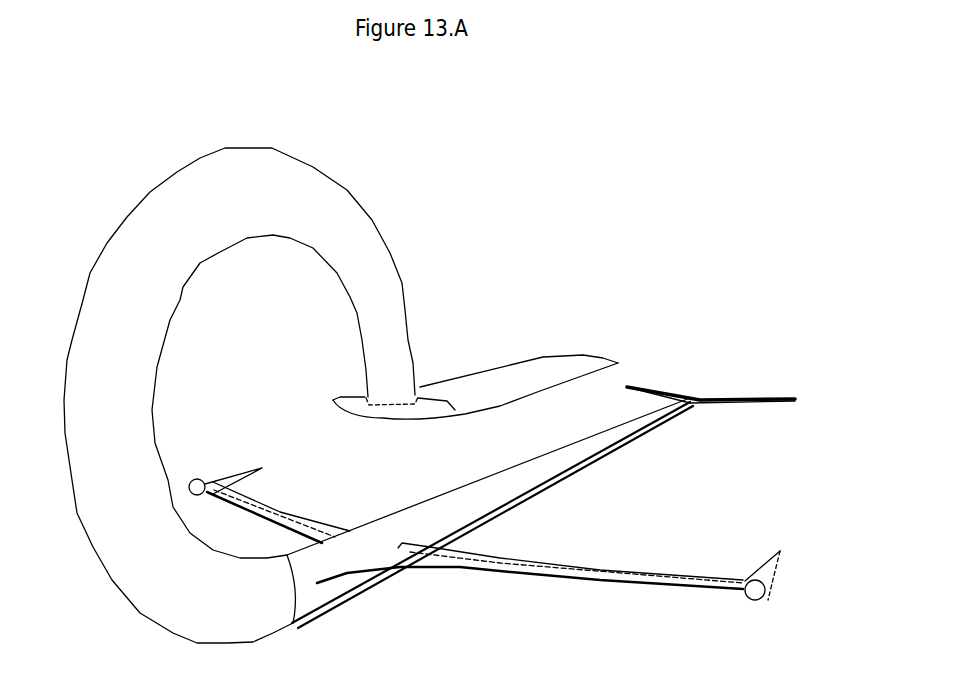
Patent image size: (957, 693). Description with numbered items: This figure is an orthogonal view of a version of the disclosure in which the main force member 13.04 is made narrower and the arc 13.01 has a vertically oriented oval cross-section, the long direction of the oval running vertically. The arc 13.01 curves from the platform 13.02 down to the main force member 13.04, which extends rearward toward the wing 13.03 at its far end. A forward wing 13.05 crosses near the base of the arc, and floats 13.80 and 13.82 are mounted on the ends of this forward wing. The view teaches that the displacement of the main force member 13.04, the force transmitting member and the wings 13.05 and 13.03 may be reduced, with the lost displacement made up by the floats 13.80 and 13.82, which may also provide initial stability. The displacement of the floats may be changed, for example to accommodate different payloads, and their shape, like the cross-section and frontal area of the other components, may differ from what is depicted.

The arc 13.01 is at (165, 202).
The platform 13.02 is at (530, 372).
The wing 13.03 is at (728, 397).
The main force member 13.04 is at (570, 457).
The wing 13.05 is at (535, 573).
The float 13.80 is at (760, 590).
The float 13.82 is at (203, 485).